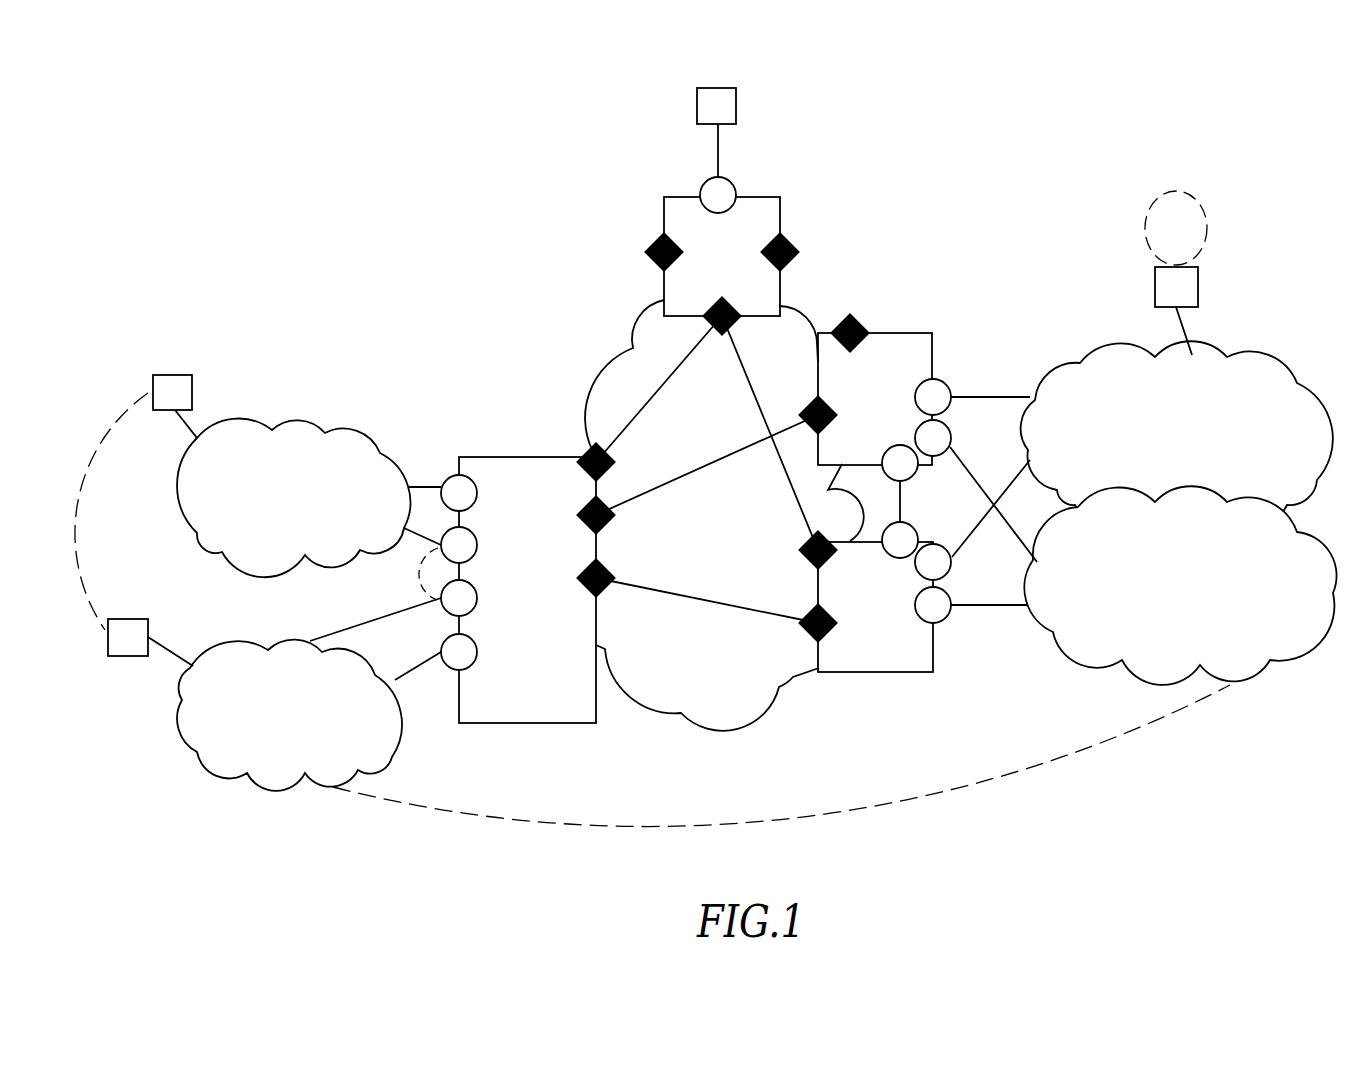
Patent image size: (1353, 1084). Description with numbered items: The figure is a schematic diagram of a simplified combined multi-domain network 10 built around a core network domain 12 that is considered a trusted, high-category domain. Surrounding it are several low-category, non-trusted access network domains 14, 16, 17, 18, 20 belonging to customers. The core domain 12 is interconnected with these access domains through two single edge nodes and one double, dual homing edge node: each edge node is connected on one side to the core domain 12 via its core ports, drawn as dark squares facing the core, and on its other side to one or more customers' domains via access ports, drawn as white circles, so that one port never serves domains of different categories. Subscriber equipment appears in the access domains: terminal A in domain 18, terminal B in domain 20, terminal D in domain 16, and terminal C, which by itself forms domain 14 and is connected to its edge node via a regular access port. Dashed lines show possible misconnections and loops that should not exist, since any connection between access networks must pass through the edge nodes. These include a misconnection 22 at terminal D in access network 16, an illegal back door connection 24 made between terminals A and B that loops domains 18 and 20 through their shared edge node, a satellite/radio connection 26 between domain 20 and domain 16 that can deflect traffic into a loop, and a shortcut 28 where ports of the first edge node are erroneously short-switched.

The multi-domain network 10 is at (595, 331).
The core network domain 12 is at (714, 638).
The access network domain 14 is at (727, 156).
The access network domain 16 is at (1142, 412).
The access network domain 17 is at (1143, 566).
The access network domain 18 is at (297, 476).
The access network domain 20 is at (274, 694).
The misconnection 22 is at (1180, 192).
The illegal connection 24 is at (118, 425).
The satellite/radio connection 26 is at (712, 825).
The shortcut 28 is at (405, 574).